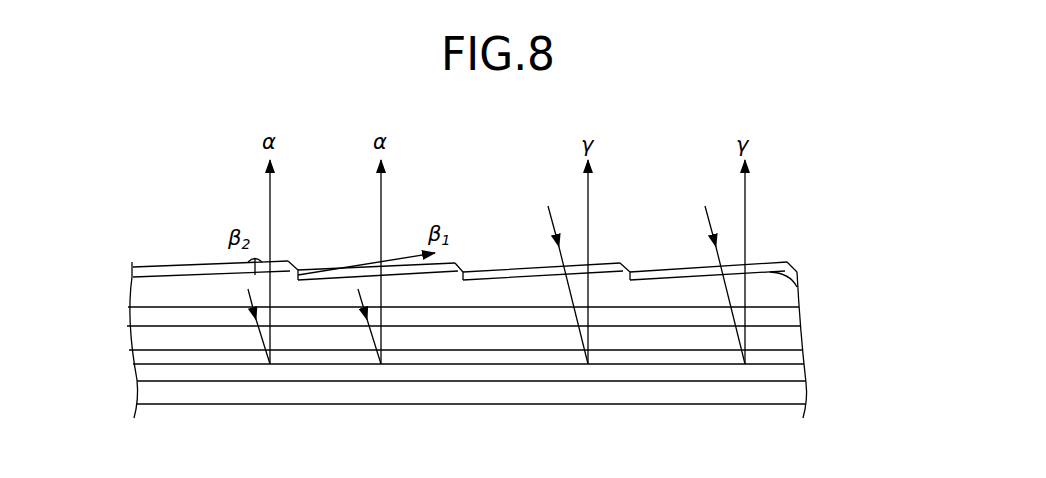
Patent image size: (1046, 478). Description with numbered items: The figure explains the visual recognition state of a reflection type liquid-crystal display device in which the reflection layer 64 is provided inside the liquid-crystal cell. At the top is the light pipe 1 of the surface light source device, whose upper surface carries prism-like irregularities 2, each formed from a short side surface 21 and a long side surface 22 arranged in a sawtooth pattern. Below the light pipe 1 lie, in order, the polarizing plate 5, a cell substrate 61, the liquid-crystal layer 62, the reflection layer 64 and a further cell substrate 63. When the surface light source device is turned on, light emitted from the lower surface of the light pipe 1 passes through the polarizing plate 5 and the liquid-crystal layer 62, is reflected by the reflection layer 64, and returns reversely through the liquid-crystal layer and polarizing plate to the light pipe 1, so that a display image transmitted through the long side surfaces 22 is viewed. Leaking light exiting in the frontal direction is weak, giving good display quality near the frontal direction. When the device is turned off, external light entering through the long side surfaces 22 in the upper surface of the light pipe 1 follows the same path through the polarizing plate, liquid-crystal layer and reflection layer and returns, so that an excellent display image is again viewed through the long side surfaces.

The light pipe 1 is at (780, 295).
The prism-like irregularities 2 is at (508, 244).
The short side surface 21 is at (465, 270).
The long side surface 22 is at (163, 270).
The polarizing plate 5 is at (788, 317).
The cell substrate 61 is at (792, 338).
The liquid-crystal layer 62 is at (797, 357).
The cell substrate 63 is at (800, 392).
The reflection layer 64 is at (798, 372).